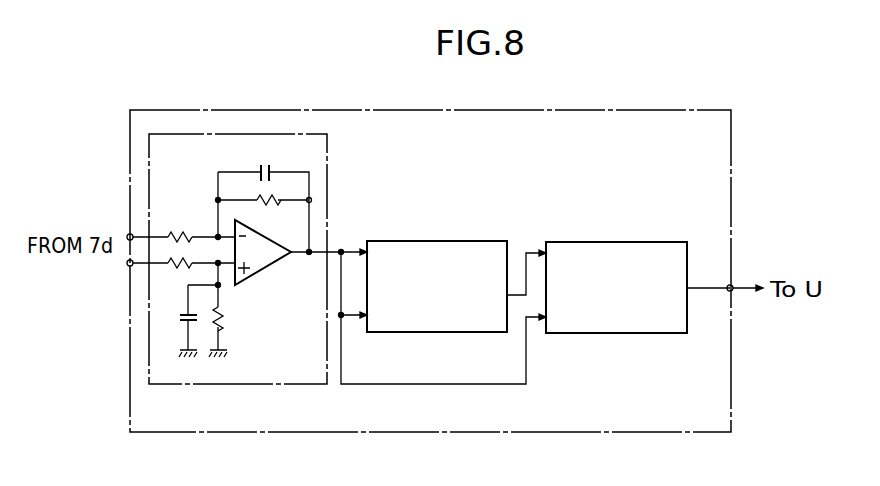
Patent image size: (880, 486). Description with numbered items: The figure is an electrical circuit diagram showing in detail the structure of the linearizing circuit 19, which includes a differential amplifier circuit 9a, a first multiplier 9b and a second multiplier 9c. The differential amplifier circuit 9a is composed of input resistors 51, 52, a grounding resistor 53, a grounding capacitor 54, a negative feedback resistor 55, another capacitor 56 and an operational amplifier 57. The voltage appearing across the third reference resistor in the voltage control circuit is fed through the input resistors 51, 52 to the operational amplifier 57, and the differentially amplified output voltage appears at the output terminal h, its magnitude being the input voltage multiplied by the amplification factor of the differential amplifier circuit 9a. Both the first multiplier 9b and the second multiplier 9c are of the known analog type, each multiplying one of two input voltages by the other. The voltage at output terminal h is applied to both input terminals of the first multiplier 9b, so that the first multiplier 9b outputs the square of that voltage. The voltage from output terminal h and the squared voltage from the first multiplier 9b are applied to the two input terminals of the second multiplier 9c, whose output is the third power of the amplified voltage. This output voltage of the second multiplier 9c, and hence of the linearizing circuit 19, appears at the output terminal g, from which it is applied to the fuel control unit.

The linearizing circuit 19 is at (695, 110).
The differential amplifier circuit 9a is at (327, 173).
The first multiplier 9b is at (489, 241).
The second multiplier 9c is at (658, 242).
The input resistor 51 is at (191, 232).
The input resistor 52 is at (178, 267).
The grounding resistor 53 is at (222, 315).
The grounding capacitor 54 is at (186, 320).
The negative feedback resistor 55 is at (272, 203).
The capacitor 56 is at (278, 157).
The operational amplifier 57 is at (271, 267).
The output terminal h is at (309, 256).
The output terminal g is at (728, 285).